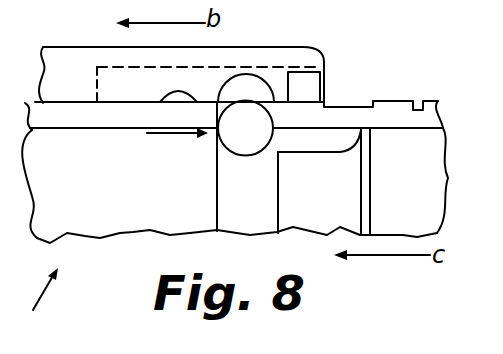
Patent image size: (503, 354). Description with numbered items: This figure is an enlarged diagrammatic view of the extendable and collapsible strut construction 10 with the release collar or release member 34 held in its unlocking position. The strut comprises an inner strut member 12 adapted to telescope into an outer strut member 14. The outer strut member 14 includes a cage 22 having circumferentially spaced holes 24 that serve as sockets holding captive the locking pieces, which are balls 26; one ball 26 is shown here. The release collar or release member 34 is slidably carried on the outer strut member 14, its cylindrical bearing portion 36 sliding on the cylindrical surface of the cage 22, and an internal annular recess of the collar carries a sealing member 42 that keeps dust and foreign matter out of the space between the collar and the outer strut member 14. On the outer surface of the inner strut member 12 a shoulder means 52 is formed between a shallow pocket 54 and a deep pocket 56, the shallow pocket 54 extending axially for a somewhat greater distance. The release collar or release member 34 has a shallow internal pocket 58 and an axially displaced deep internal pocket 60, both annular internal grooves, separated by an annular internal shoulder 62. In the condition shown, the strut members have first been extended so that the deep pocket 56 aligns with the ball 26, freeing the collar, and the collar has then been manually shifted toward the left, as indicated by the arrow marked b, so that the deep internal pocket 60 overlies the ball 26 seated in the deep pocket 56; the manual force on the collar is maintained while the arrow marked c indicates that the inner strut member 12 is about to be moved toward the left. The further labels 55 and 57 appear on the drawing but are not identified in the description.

The extendable and collapsible strut construction 10 is at (37, 303).
The inner strut member 12 is at (400, 138).
The outer strut member 14 is at (42, 115).
The cage 22 is at (108, 220).
The holes 24 is at (273, 99).
The balls 26 is at (243, 112).
The release collar or release member 34 is at (71, 60).
The cylindrical bearing portion 36 is at (122, 94).
The sealing member 42 is at (310, 80).
The shoulder means 52 is at (258, 166).
The shallow pocket 54 is at (315, 137).
The channel bottom 55 is at (212, 212).
The deep pocket 56 is at (217, 183).
The double wall 57 is at (367, 192).
The shallow internal pocket 58 is at (179, 92).
The deep internal pocket 60 is at (257, 73).
The annular internal shoulder 62 is at (210, 97).